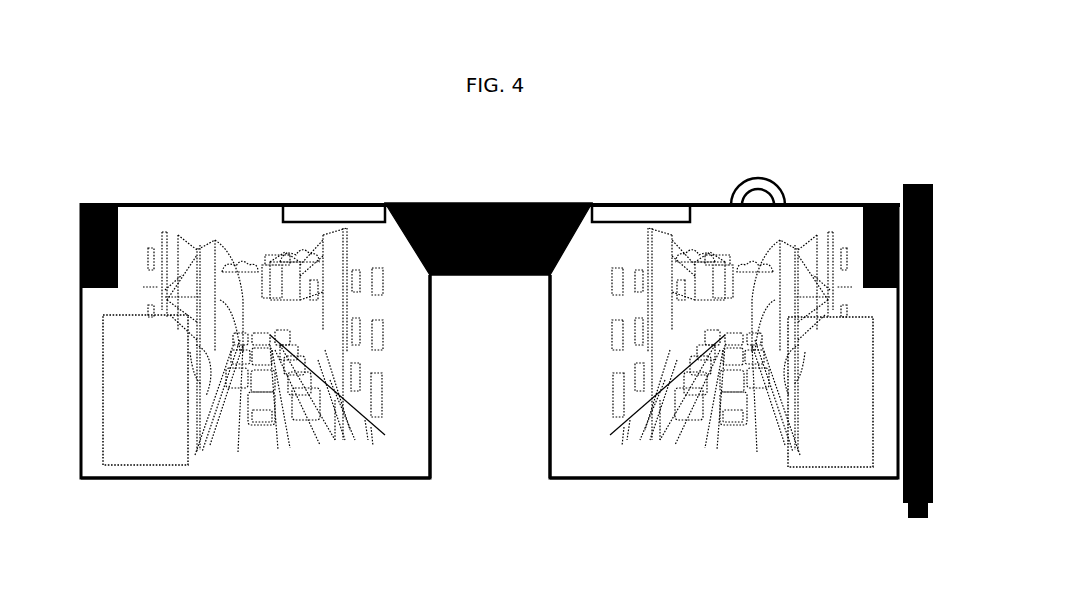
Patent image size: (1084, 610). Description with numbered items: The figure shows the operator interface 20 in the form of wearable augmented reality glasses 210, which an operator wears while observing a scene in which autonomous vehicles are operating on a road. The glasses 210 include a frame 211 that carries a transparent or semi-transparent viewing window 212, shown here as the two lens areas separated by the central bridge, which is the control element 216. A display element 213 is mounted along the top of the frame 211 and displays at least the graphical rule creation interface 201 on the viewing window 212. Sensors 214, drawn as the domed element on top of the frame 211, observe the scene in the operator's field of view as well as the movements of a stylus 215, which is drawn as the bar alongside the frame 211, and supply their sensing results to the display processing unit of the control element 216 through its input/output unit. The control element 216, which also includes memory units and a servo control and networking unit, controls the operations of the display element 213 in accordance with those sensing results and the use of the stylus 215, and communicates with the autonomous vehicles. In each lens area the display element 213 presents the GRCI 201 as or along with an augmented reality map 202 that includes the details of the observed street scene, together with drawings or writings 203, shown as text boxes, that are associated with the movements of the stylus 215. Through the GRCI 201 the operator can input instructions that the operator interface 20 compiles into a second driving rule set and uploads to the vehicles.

The operator interface 20 is at (103, 202).
The graphical rule creation interface (GRCI) 201 is at (704, 530).
The augmented reality map 202 is at (262, 327).
The drawings or writings 203 is at (783, 532).
The wearable augmented reality glasses 210 is at (217, 204).
The frame 211 is at (385, 478).
The viewing window 212 is at (396, 423).
The display element 213 is at (313, 208).
The sensors 214 is at (777, 183).
The stylus 215 is at (910, 184).
The control element 216 is at (484, 203).